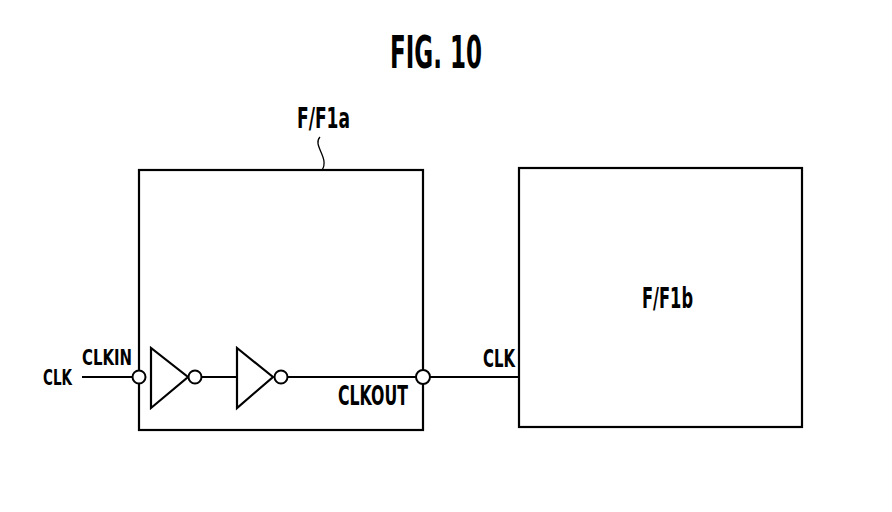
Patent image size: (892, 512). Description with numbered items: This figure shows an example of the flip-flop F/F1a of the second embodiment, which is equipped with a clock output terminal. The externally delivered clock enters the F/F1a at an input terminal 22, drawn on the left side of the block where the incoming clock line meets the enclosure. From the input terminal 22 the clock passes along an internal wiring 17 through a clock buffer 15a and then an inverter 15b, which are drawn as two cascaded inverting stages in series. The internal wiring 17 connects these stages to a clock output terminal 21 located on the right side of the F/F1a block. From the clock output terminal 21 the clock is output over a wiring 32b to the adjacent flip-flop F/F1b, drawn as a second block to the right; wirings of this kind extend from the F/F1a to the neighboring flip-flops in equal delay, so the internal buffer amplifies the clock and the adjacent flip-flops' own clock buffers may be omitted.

The input terminal 22 is at (138, 385).
The clock buffer 15a is at (168, 395).
The inverter 15b is at (253, 395).
The internal wiring 17 is at (317, 375).
The wiring 32b is at (460, 373).
The clock output terminal 21 is at (428, 383).